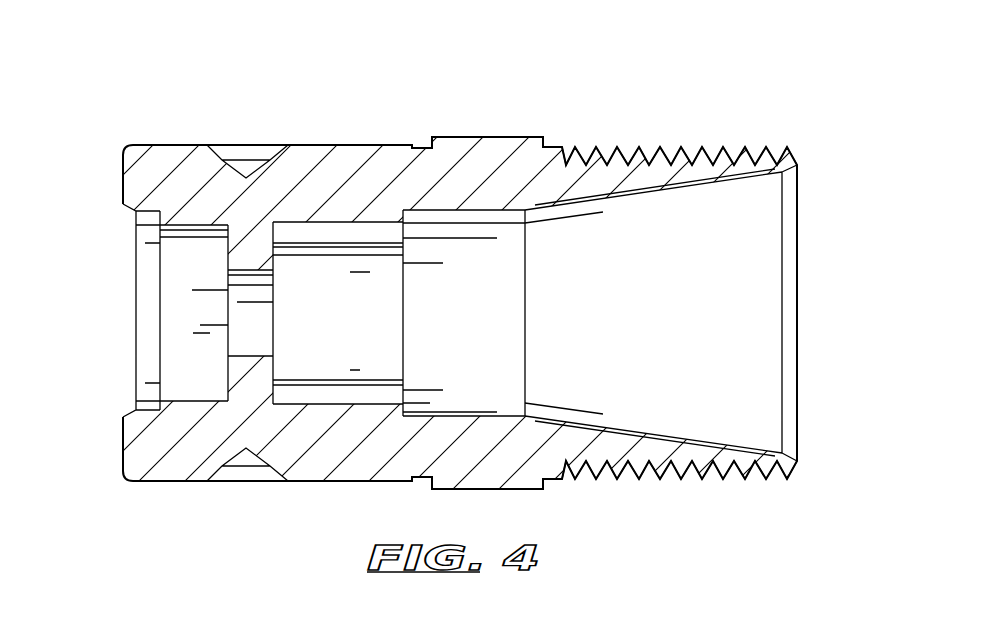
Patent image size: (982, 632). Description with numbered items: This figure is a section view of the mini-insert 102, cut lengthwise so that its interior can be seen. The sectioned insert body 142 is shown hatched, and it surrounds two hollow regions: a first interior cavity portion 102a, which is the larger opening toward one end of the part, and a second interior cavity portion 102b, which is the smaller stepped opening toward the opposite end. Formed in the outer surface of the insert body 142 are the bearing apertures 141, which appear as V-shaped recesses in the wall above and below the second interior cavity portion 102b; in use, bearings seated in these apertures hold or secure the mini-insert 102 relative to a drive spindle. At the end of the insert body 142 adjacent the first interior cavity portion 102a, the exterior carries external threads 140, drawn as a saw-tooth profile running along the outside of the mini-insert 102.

The mini-insert 102 is at (105, 187).
The first interior cavity portion 102a is at (685, 337).
The second interior cavity portion 102b is at (193, 325).
The external threads 140 is at (638, 148).
The bearing apertures 141 is at (247, 155).
The insert body 142 is at (335, 173).